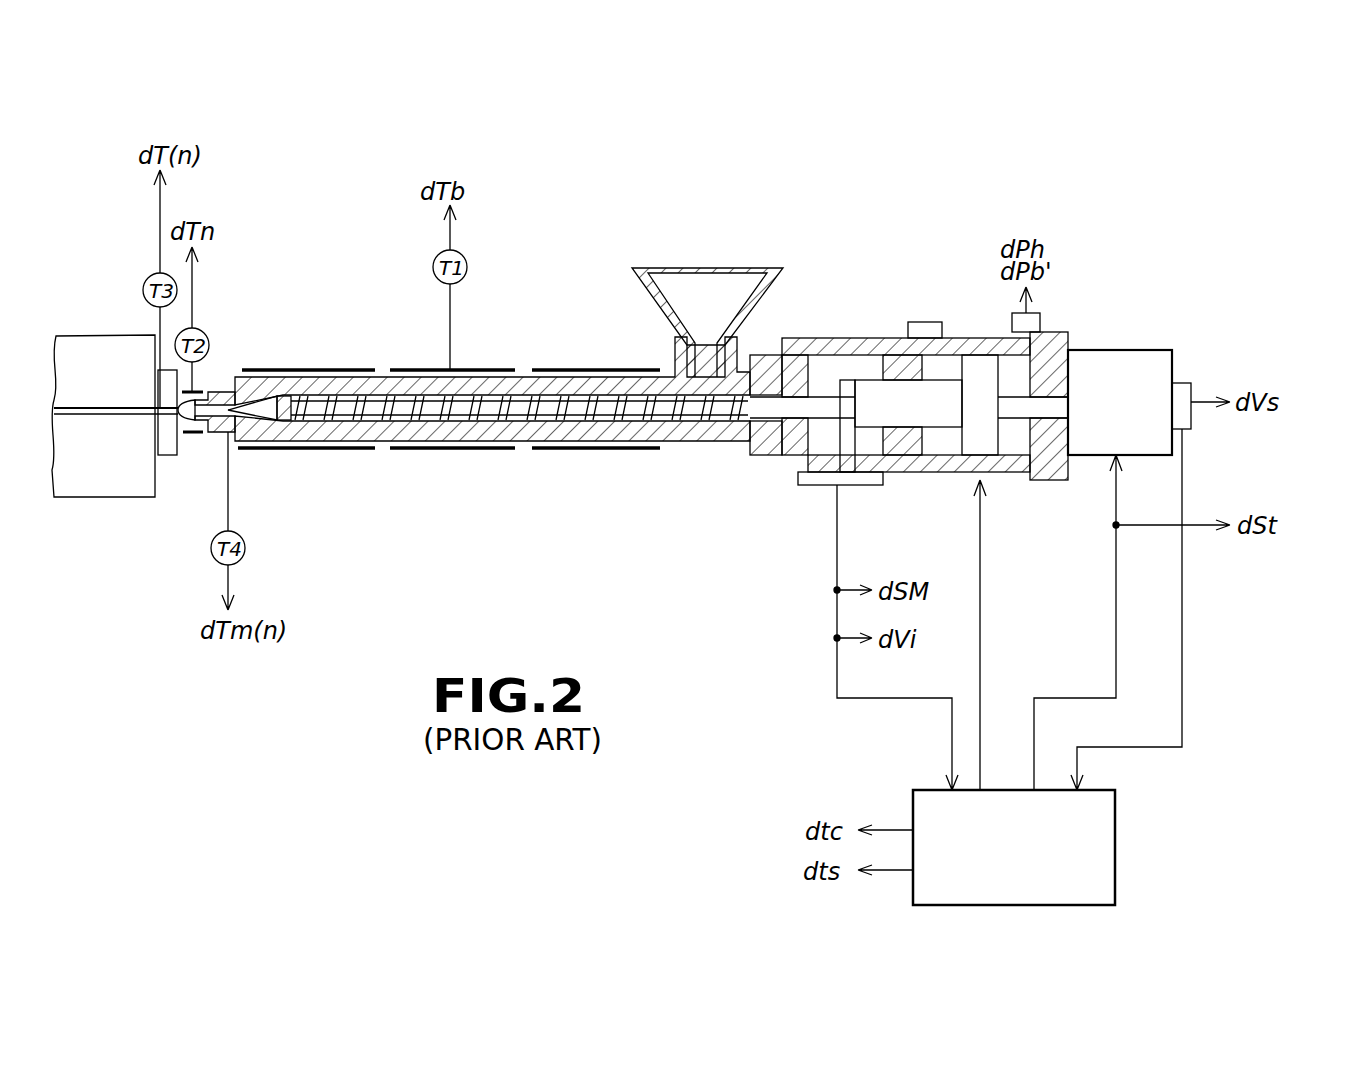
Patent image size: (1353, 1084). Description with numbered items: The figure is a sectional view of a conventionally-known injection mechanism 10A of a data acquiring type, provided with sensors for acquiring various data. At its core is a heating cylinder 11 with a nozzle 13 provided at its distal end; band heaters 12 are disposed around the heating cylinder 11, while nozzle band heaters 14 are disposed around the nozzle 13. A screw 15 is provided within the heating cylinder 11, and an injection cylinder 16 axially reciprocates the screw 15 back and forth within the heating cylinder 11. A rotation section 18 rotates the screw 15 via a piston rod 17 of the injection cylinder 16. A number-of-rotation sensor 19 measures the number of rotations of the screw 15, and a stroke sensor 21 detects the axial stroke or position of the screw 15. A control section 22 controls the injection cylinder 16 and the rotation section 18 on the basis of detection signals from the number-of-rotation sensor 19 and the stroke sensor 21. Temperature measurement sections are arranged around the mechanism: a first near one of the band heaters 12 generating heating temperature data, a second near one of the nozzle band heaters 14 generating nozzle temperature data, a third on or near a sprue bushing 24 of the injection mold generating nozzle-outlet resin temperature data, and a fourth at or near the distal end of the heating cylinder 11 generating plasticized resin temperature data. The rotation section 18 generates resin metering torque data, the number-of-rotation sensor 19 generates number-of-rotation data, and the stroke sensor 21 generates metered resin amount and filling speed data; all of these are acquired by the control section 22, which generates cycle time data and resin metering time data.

The injection mechanism 10A is at (1022, 213).
The heating cylinder 11 is at (608, 441).
The band heaters 12 is at (300, 370).
The nozzle 13 is at (180, 418).
The nozzle band heaters 14 is at (197, 440).
The screw 15 is at (470, 410).
The injection cylinder 16 is at (968, 350).
The piston rod 17 is at (935, 345).
The rotation section 18 is at (1118, 350).
The number-of-rotation sensor 19 is at (1180, 383).
The stroke sensor 21 is at (805, 485).
The control section 22 is at (1115, 858).
The sprue bushing 24 is at (158, 378).